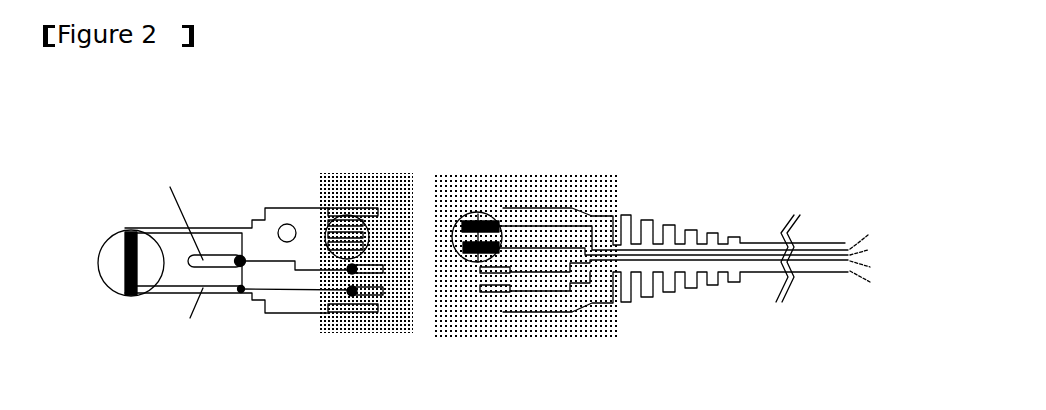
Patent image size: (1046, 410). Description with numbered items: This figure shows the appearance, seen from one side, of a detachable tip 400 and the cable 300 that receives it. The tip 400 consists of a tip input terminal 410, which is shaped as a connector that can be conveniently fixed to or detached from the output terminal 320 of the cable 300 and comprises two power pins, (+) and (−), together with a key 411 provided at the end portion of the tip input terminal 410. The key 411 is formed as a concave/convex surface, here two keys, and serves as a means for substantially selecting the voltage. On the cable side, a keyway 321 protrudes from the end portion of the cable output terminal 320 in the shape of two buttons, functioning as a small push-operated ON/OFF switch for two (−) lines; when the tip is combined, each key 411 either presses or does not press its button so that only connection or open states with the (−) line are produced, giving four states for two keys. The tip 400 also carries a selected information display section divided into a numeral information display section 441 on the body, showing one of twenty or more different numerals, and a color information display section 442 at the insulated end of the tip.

The tip 400 is at (245, 264).
The tip input terminal 410 is at (375, 241).
The key 411 is at (350, 212).
The numeral information display section 441 is at (287, 243).
The color information display section 442 is at (118, 293).
The cable 300 is at (661, 241).
The cable output terminal 320 is at (661, 256).
The keyway 321 is at (480, 213).